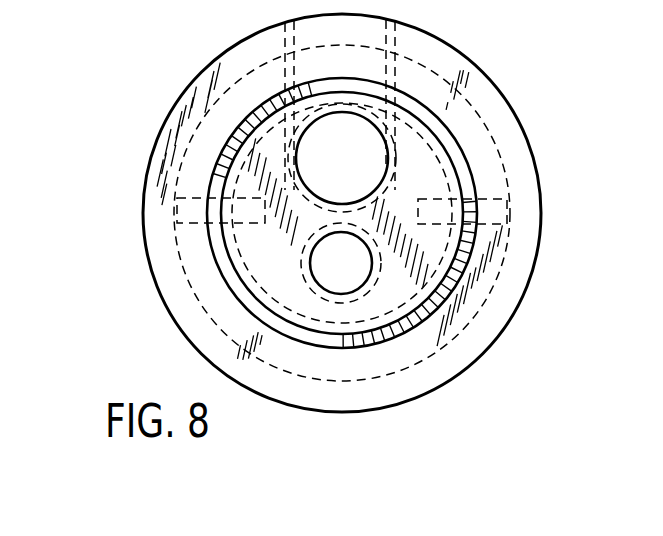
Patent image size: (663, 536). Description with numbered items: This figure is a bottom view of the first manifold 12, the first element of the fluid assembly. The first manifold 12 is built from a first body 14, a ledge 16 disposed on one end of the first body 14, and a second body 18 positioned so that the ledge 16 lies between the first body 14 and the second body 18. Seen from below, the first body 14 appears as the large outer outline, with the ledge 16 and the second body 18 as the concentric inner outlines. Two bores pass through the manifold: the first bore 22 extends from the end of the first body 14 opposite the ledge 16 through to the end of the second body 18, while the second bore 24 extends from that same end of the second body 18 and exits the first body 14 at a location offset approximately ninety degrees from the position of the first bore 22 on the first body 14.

The first manifold 12 is at (141, 213).
The first body 14 is at (427, 355).
The ledge 16 is at (173, 322).
The second body 18 is at (312, 318).
The first bore 22 is at (336, 285).
The second bore 24 is at (389, 166).